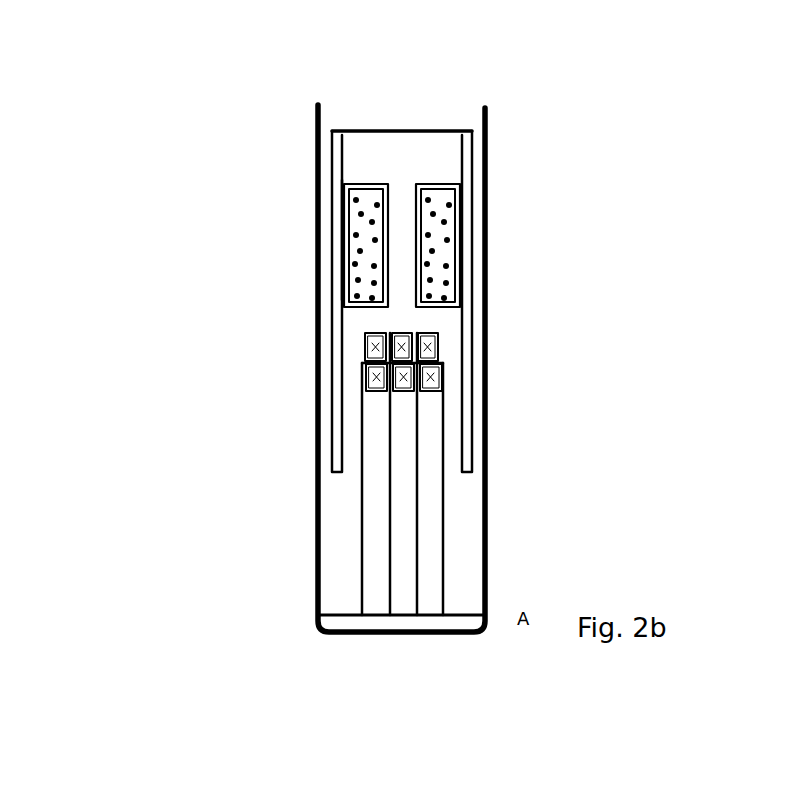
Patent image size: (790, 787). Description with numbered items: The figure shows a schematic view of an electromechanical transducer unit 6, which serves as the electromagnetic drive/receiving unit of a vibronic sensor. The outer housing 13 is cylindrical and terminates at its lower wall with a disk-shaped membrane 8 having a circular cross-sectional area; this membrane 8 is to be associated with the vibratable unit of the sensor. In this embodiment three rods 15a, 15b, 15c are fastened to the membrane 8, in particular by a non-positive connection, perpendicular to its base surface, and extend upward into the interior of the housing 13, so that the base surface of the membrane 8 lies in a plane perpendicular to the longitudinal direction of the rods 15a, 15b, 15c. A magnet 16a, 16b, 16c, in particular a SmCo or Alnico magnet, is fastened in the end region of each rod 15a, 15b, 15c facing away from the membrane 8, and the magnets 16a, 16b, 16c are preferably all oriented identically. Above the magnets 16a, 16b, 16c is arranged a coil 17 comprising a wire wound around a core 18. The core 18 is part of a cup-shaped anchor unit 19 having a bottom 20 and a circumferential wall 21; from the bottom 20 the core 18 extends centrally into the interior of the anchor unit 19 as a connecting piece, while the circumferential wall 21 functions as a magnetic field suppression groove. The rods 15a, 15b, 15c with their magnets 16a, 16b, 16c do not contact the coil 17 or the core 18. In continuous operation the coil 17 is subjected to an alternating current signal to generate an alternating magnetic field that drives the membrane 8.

The electromechanical transducer unit 6 is at (50, 44).
The membrane 8 is at (480, 638).
The outer housing tube 13 is at (491, 171).
The rod 15a is at (358, 521).
The rod 15b is at (400, 541).
The rod 15c is at (427, 606).
The magnet 16a is at (356, 363).
The magnet 16b is at (410, 390).
The magnet 16c is at (430, 354).
The coil 17 is at (456, 278).
The core 18 is at (416, 233).
The cup-shaped anchor unit 19 is at (487, 57).
The bottom 20 is at (400, 170).
The circumferential wall 21 is at (336, 230).